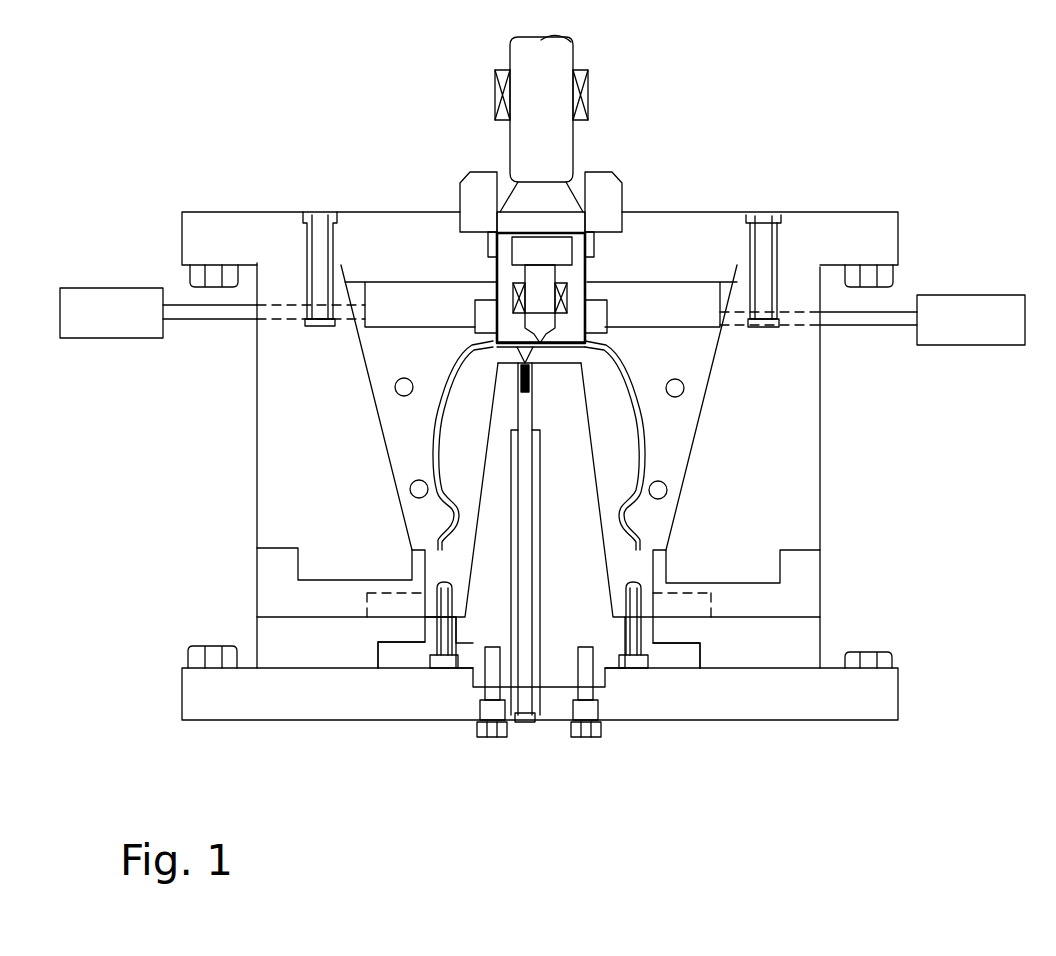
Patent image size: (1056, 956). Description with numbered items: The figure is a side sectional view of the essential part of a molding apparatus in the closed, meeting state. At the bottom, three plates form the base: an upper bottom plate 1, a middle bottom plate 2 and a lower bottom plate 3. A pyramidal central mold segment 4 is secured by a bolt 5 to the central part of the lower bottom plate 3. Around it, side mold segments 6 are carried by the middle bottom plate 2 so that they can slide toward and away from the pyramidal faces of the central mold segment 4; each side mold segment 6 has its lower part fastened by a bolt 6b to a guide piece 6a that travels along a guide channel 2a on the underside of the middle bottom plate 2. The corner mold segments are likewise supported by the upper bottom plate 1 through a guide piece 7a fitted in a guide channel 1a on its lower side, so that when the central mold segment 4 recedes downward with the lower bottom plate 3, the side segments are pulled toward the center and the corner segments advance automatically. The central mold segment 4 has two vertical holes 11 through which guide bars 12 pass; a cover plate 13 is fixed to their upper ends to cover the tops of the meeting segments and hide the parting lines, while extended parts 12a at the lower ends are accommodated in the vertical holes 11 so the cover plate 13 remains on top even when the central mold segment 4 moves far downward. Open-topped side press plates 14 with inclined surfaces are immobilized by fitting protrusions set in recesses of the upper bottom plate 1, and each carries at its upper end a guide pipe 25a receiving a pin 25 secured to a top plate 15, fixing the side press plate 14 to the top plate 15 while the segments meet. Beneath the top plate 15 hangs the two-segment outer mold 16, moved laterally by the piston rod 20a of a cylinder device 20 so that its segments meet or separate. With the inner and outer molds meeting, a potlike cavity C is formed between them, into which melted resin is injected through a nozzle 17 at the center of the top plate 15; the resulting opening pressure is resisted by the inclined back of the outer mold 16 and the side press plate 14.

The upper bottom plate 1 is at (810, 598).
The fitting recess / guide channel 1a is at (392, 590).
The middle bottom plate 2 is at (810, 642).
The guide channel 2a is at (378, 660).
The lower bottom plate 3 is at (805, 703).
The central mold segment 4 is at (552, 660).
The bolt 5 is at (580, 737).
The side mold segment 6 is at (628, 467).
The guide piece 6a is at (400, 658).
The bolt 6b is at (442, 668).
The guide piece 7a is at (382, 607).
The vertical hole 11 is at (537, 603).
The guide bar 12 is at (525, 527).
The extended part 12a is at (517, 722).
The cover plate 13 is at (612, 348).
The side press plate 14 is at (287, 397).
The top plate 15 is at (707, 240).
The outer mold 16 is at (693, 412).
The nozzle 17 is at (497, 273).
The cylinder device 20 is at (103, 292).
The piston rod 20a is at (883, 322).
The pin 25 is at (763, 230).
The guide pipe 25a is at (783, 250).
The cavity C is at (628, 507).